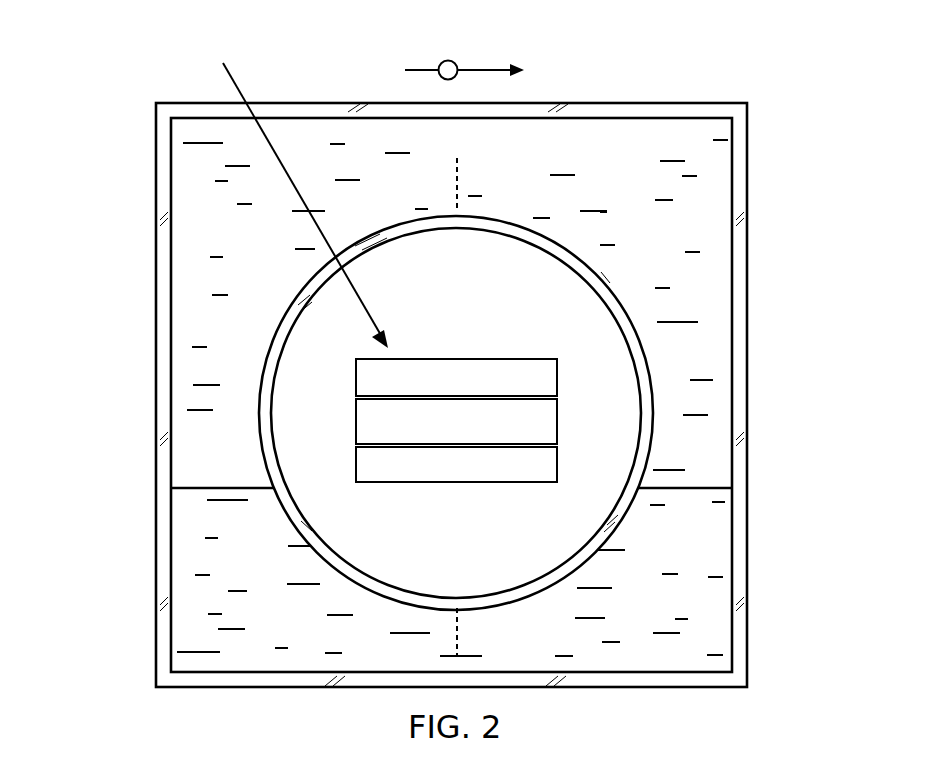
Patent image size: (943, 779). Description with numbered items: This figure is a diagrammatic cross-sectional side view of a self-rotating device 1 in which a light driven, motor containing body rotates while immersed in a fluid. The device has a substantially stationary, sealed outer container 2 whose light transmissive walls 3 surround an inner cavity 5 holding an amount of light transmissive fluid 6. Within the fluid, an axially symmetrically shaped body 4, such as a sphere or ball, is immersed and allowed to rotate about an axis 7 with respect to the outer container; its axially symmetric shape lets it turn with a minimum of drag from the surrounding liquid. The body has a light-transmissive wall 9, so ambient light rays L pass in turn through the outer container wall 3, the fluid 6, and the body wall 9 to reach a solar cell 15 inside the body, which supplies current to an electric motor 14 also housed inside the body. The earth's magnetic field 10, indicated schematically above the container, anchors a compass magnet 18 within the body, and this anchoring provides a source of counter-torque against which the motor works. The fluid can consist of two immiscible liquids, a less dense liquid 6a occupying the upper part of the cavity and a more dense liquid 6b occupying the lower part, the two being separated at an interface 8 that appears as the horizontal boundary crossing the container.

The self-rotating device 1 is at (824, 94).
The outer container 2 is at (747, 172).
The light transmissive walls 3 is at (192, 108).
The axially symmetrically shaped body 4 is at (601, 272).
The inner cavity 5 is at (202, 232).
The light transmissive fluid 6 is at (631, 178).
The less dense liquid 6a is at (709, 458).
The more dense liquid 6b is at (709, 545).
The axis 7 is at (455, 172).
The interface 8 is at (712, 488).
The light-transmissive wall 9 is at (494, 224).
The earth's magnetic field 10 is at (447, 60).
The electric motor 14 is at (558, 420).
The solar cell 15 is at (558, 378).
The compass magnet 18 is at (558, 465).
The ambient light rays L is at (293, 189).